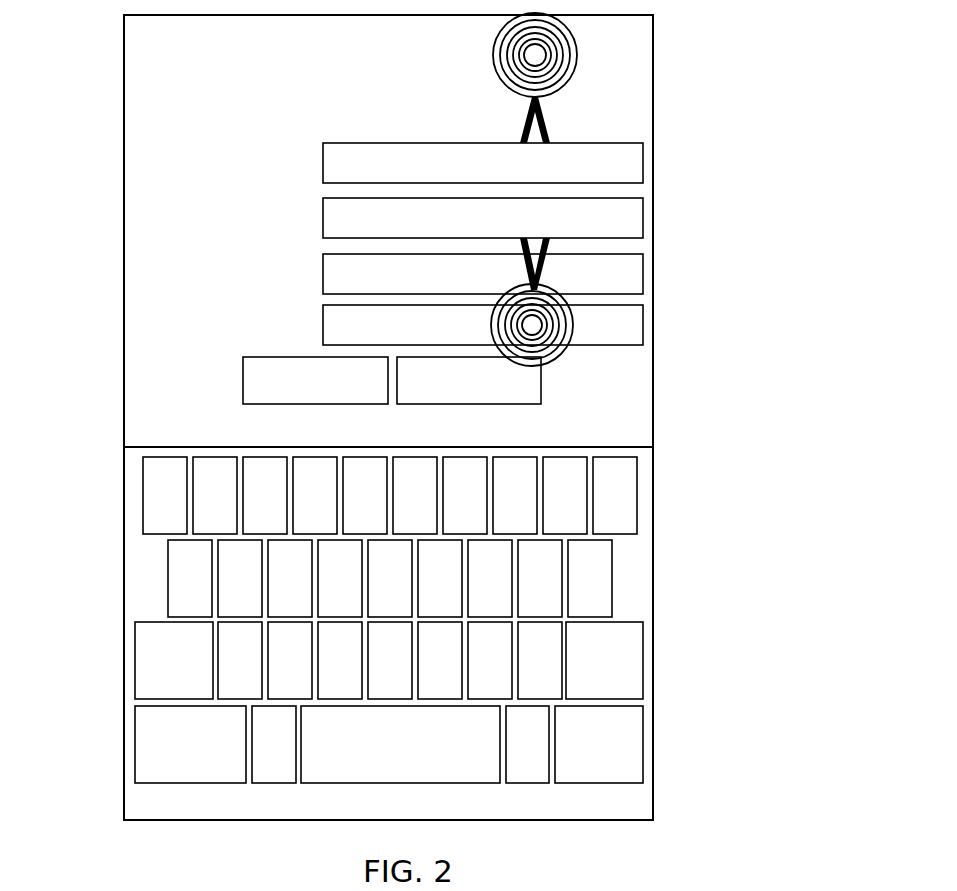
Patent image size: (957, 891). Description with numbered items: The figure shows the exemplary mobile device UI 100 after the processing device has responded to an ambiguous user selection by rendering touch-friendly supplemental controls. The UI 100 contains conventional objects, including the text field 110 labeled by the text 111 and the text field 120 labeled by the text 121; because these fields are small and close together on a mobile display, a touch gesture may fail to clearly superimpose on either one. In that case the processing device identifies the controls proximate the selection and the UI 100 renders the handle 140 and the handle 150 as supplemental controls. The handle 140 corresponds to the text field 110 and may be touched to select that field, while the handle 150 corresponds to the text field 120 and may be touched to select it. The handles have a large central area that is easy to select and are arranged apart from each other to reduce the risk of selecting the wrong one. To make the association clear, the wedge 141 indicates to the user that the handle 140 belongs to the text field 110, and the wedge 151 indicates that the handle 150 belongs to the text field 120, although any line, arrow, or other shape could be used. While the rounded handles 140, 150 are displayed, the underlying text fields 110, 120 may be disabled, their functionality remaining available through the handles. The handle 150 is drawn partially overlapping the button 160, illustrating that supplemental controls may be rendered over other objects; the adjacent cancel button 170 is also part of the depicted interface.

The UI 100 is at (680, 466).
The text field 110 is at (643, 163).
The text 111 is at (175, 165).
The text field 120 is at (643, 215).
The text 121 is at (150, 216).
The handle 140 is at (577, 70).
The wedge 141 is at (523, 120).
The handle 150 is at (573, 319).
The wedge 151 is at (547, 255).
The button 160 is at (541, 378).
The cancel button 170 is at (243, 380).